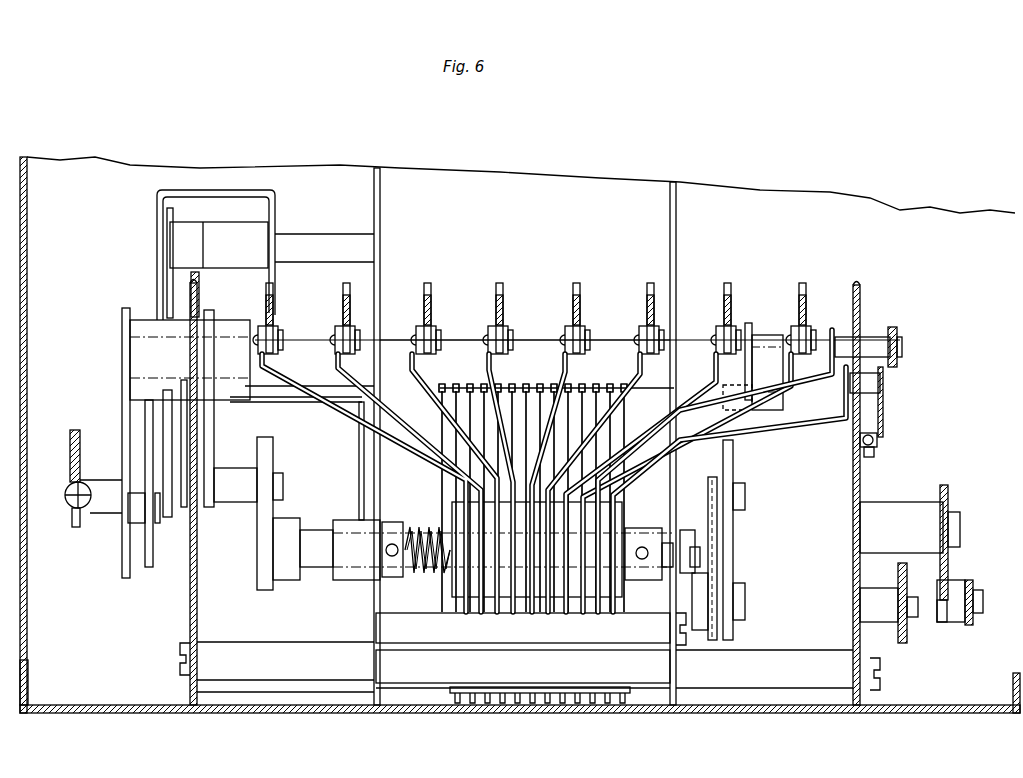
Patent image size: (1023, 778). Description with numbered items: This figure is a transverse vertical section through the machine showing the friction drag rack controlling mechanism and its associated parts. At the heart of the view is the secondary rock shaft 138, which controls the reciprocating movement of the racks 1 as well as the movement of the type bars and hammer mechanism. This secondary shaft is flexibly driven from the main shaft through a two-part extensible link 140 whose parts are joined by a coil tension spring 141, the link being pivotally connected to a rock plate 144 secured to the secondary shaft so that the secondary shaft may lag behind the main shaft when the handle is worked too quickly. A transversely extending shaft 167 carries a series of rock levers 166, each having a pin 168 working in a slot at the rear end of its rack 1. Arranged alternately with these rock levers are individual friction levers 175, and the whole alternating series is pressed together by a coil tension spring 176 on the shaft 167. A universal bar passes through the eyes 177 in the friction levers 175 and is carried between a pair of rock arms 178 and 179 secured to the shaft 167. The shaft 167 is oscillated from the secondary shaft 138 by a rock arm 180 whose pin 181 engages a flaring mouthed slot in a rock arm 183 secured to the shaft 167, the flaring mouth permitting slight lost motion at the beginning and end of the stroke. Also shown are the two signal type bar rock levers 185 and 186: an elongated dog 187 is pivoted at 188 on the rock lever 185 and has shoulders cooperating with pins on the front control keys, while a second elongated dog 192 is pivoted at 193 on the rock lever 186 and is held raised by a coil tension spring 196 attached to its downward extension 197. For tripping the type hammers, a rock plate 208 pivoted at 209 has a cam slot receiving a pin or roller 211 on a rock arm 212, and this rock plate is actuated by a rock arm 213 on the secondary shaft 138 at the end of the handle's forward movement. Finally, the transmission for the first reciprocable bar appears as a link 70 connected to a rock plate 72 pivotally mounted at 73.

The rack 1 is at (500, 304).
The link 70 is at (968, 625).
The rock plate 72 is at (948, 565).
The pivot 73 is at (960, 530).
The secondary rock shaft 138 is at (525, 355).
The two-part extensible link 140 is at (68, 458).
The coil tension spring 141 is at (92, 514).
The rock plate 144 is at (122, 420).
The rock levers 166 is at (338, 415).
The transversely extending shaft 167 is at (318, 562).
The pin 168 is at (346, 326).
The friction levers 175 is at (484, 612).
The coil tension spring 176 is at (424, 573).
The eyes 177 is at (533, 597).
The rock arm 178 is at (392, 520).
The rock arm 179 is at (644, 528).
The rock arm 180 is at (214, 440).
The pin 181 is at (240, 500).
The rock arm 183 is at (276, 512).
The rock lever 185 is at (762, 430).
The rock lever 186 is at (815, 420).
The elongated dog 187 is at (900, 337).
The pivot 188 is at (904, 357).
The elongated dog 192 is at (886, 410).
The pivot 193 is at (885, 385).
The coil tension spring 196 is at (872, 457).
The downward extension 197 is at (880, 440).
The rock plate 208 is at (733, 535).
The pivot 209 is at (745, 600).
The pin or roller 211 is at (745, 497).
The rock arm 212 is at (714, 552).
The rock arm 213 is at (750, 340).